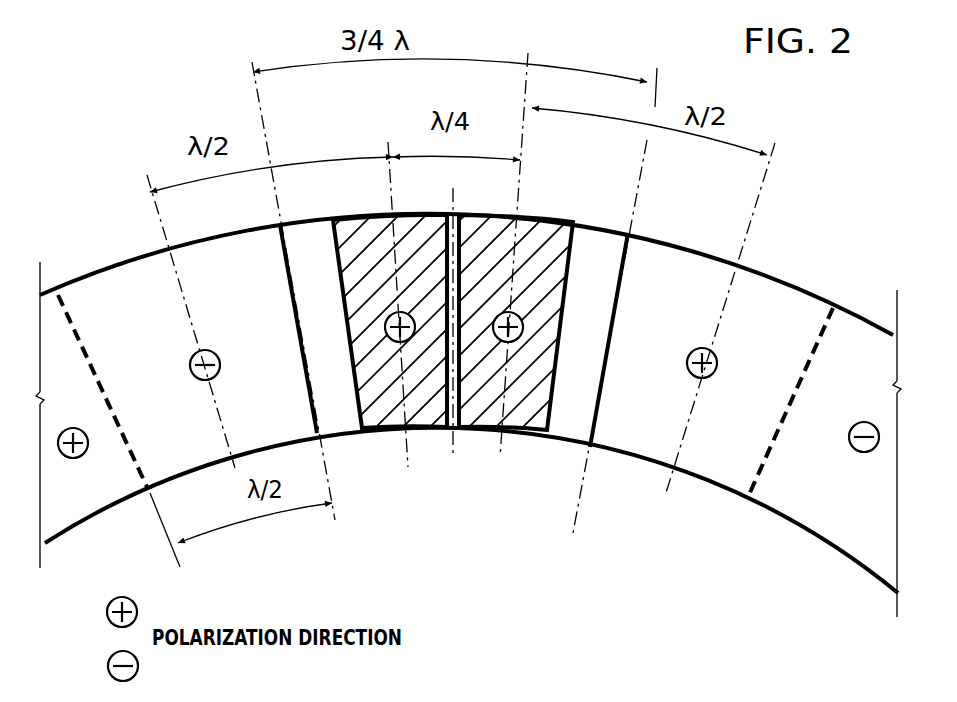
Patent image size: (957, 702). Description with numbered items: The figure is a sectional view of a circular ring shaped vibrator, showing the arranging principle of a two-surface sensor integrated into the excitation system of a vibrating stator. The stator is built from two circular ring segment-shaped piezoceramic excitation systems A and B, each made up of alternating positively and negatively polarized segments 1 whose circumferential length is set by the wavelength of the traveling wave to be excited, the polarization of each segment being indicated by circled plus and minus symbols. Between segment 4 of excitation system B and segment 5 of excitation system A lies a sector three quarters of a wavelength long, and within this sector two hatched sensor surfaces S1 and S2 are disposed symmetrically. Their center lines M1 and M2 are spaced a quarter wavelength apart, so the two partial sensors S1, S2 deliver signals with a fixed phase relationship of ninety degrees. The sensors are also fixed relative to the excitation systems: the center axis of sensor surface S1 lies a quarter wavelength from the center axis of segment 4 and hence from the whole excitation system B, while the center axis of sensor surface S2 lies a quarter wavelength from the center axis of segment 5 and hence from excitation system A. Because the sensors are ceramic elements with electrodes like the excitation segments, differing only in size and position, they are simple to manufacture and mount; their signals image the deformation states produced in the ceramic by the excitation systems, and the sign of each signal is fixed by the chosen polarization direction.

The polarized segments 1 is at (777, 488).
The segment of excitation system B 4 is at (118, 294).
The segment of excitation system A 5 is at (750, 289).
The excitation system A is at (810, 553).
The excitation system B is at (68, 266).
The sensor surface S1 is at (400, 433).
The sensor surface S2 is at (492, 437).
The center line of sensor surface S1 M1 is at (385, 180).
The center line of sensor surface S2 M2 is at (520, 180).